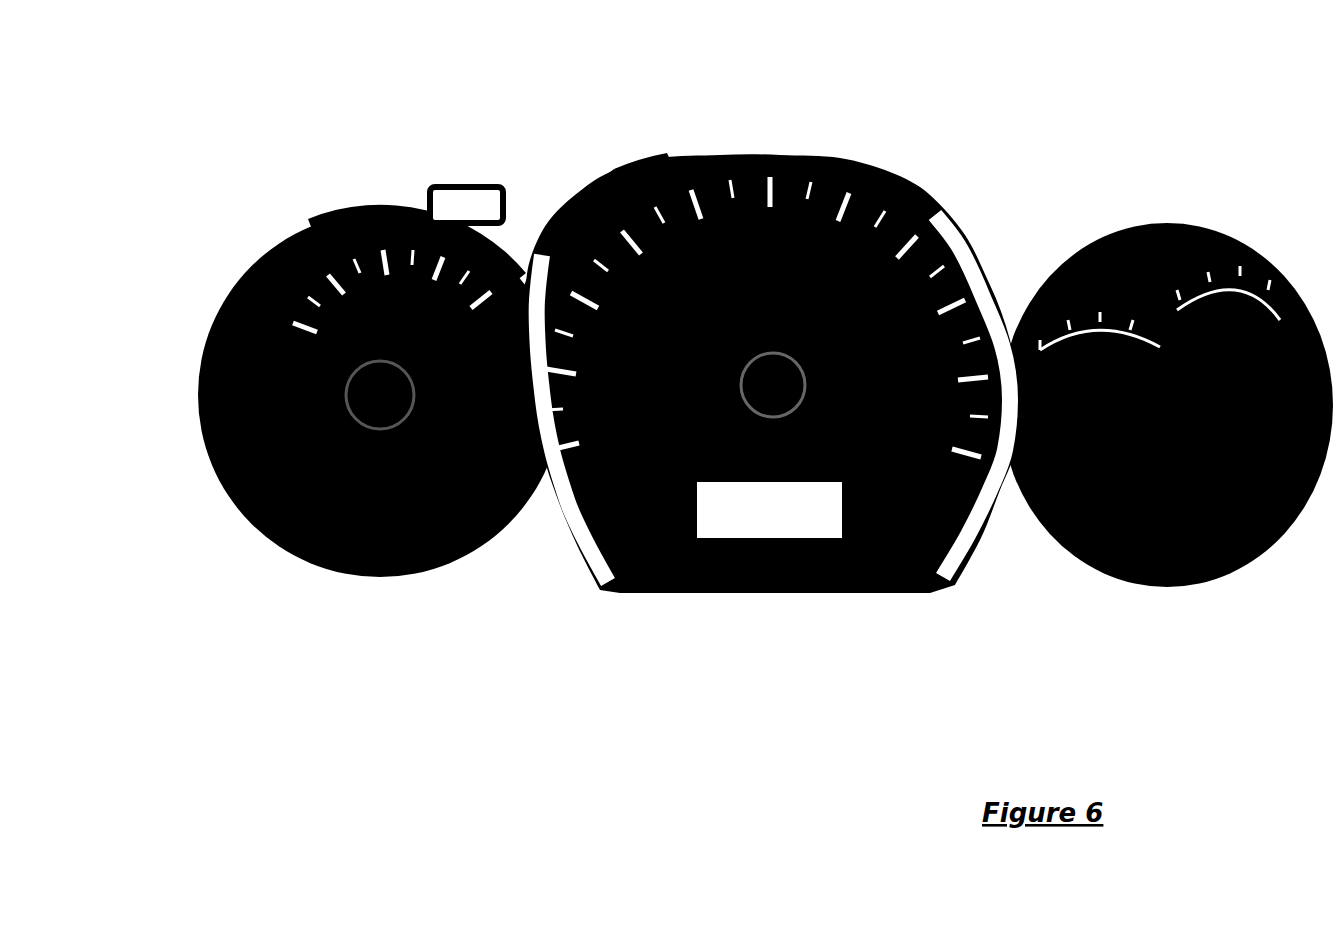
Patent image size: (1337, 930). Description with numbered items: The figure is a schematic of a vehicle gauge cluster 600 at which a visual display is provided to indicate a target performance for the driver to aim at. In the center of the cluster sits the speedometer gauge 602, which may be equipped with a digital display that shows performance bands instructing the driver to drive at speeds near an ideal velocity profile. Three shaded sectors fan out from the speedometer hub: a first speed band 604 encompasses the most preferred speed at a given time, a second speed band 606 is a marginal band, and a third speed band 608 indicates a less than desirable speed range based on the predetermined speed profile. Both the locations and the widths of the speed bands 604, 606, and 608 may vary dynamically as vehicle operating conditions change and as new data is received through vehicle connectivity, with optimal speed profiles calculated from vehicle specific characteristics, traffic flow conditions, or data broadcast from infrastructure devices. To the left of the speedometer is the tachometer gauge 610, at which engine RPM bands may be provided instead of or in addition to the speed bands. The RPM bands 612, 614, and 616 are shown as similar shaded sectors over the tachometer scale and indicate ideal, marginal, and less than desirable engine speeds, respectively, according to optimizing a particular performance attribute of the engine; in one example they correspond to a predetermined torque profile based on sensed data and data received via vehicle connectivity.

The vehicle gauge cluster 600 is at (1078, 61).
The speedometer gauge 602 is at (878, 178).
The first speed band 604 is at (527, 280).
The second speed band 606 is at (560, 233).
The third speed band 608 is at (630, 172).
The tachometer gauge 610 is at (268, 525).
The RPM band 612 is at (220, 387).
The RPM band 614 is at (240, 290).
The RPM band 616 is at (308, 228).